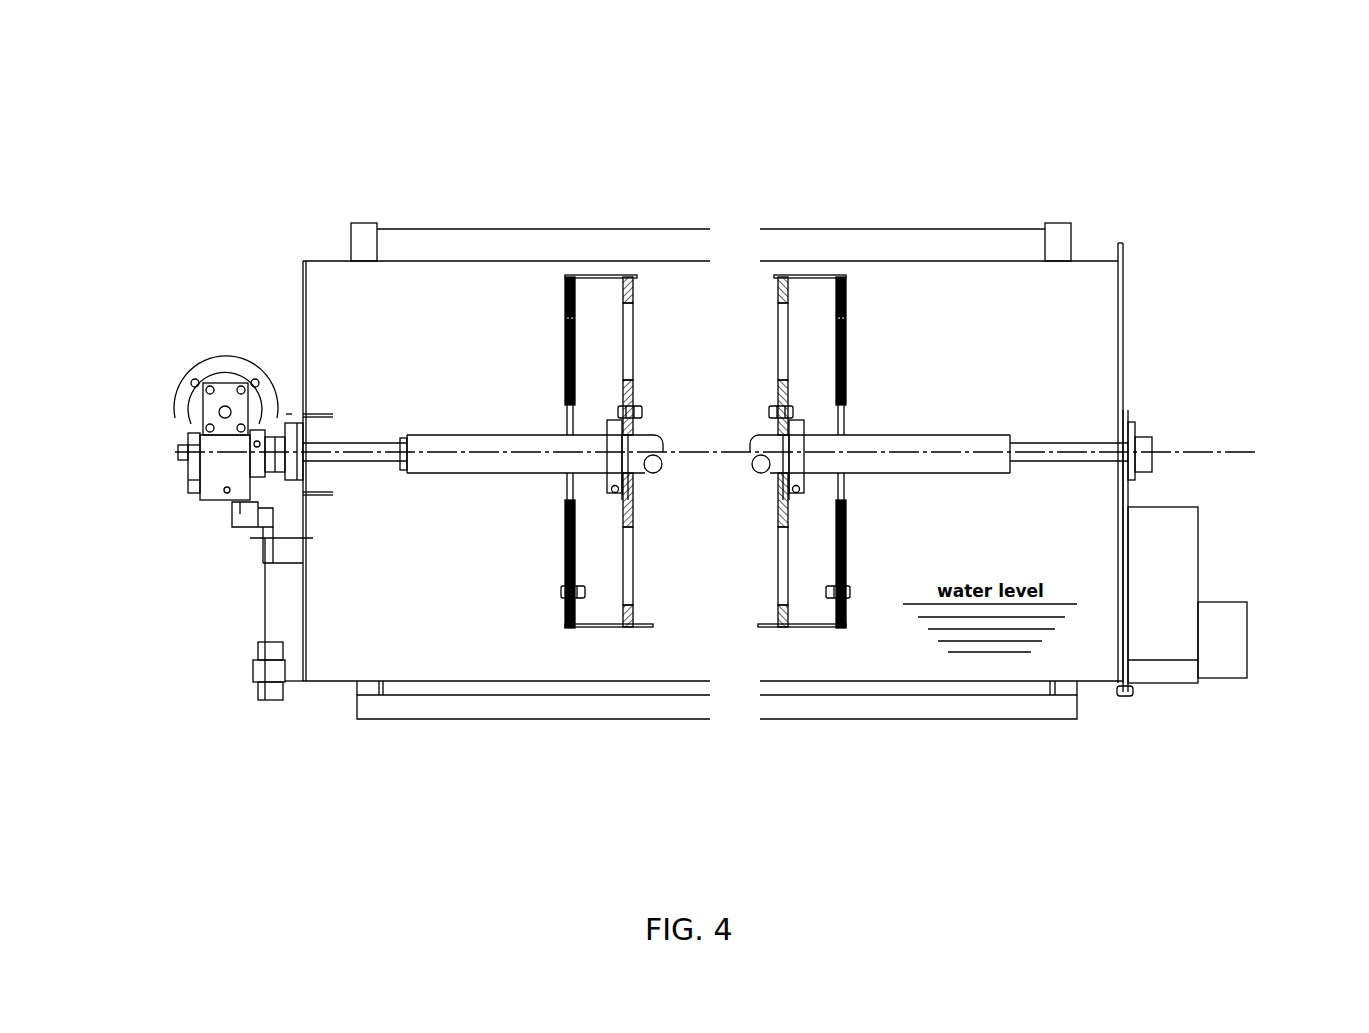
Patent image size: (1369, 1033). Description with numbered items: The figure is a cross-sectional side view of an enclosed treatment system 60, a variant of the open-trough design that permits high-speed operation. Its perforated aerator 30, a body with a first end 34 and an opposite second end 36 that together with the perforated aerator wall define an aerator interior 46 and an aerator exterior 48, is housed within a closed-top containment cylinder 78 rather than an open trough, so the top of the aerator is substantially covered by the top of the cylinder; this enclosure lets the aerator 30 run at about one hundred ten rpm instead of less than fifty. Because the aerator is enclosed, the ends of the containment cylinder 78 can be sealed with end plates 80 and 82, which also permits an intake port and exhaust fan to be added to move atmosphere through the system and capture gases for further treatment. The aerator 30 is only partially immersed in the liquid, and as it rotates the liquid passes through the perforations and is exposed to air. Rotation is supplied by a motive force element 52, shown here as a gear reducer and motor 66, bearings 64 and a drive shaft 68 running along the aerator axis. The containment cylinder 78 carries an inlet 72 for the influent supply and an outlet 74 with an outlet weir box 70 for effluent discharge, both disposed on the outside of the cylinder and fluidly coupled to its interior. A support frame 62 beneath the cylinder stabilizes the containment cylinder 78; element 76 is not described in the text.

The aerator 30 is at (618, 381).
The first end 34 is at (566, 340).
The second end 36 is at (890, 386).
The aerator interior 46 is at (610, 380).
The aerator exterior 48 is at (553, 382).
The motive force element 52 is at (130, 391).
The treatment system 60 is at (1238, 100).
The support frame 62 is at (532, 722).
The bearings 64 is at (701, 356).
The gear reducer and motor 66 is at (210, 356).
The drive shaft 68 is at (527, 476).
The outlet weir box 70 is at (1228, 576).
The inlet 72 is at (258, 562).
The outlet 74 is at (1279, 626).
The disc 76 is at (662, 401).
The containment cylinder 78 is at (703, 395).
The end plate 80 is at (303, 610).
The end plate 82 is at (1206, 545).